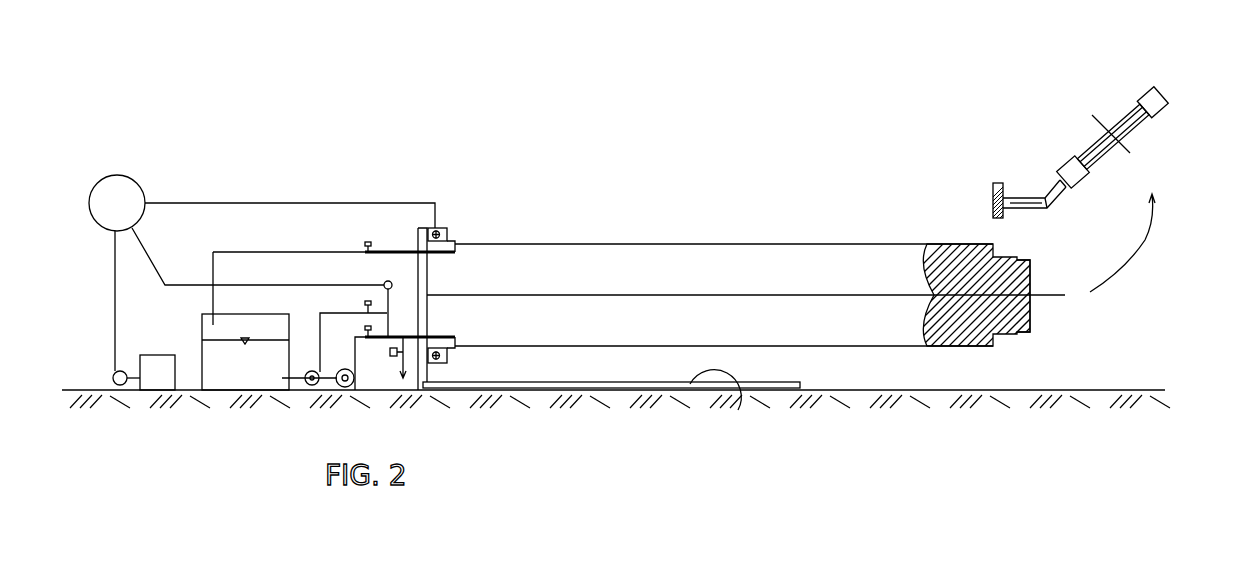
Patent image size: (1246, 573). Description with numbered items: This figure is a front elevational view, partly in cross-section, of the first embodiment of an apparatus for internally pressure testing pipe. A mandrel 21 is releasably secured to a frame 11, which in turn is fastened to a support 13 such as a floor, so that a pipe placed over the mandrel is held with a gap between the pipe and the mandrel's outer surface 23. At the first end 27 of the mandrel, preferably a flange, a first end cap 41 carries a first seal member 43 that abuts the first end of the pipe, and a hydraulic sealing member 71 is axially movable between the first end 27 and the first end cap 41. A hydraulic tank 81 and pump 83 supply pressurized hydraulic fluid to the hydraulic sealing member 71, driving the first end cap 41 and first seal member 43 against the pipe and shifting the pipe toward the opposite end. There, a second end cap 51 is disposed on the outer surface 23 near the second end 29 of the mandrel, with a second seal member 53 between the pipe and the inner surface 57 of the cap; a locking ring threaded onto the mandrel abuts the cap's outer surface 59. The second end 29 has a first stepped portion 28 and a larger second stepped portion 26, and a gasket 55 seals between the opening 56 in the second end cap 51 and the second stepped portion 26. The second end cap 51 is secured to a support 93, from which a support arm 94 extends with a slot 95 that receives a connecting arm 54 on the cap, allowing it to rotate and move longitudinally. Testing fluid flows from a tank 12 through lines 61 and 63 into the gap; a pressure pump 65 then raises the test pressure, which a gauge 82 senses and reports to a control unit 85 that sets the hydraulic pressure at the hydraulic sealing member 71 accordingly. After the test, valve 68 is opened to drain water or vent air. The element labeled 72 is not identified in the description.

The frame 11 is at (703, 390).
The tank 12 is at (237, 375).
The support 13 is at (72, 388).
The mandrel 21 is at (587, 244).
The outer surface 23 is at (697, 244).
The second stepped portion 26 is at (1005, 338).
The first end 27 is at (453, 383).
The first stepped portion 28 is at (1022, 338).
The second end 29 is at (1035, 315).
The first end cap 41 is at (440, 227).
The first seal member 43 is at (453, 233).
The second end cap 51 is at (1133, 147).
The second seal member 53 is at (1080, 184).
The connecting arm 54 is at (1024, 195).
The gasket 55 is at (1117, 120).
The opening 56 is at (1148, 250).
The inner surface 57 is at (1162, 105).
The outer surface 59 is at (1064, 182).
The testing line 61 is at (393, 252).
The line 63 is at (430, 334).
The pressure pump 65 is at (312, 373).
The valve 68 is at (394, 357).
The hydraulic sealing member 71 is at (430, 227).
The cable 72 is at (228, 203).
The hydraulic tank 81 is at (175, 370).
The gauge 82 is at (386, 284).
The pump 83 is at (121, 370).
The control unit 85 is at (130, 177).
The support 93 is at (998, 183).
The support arm 94 is at (1010, 210).
The slot 95 is at (1055, 187).